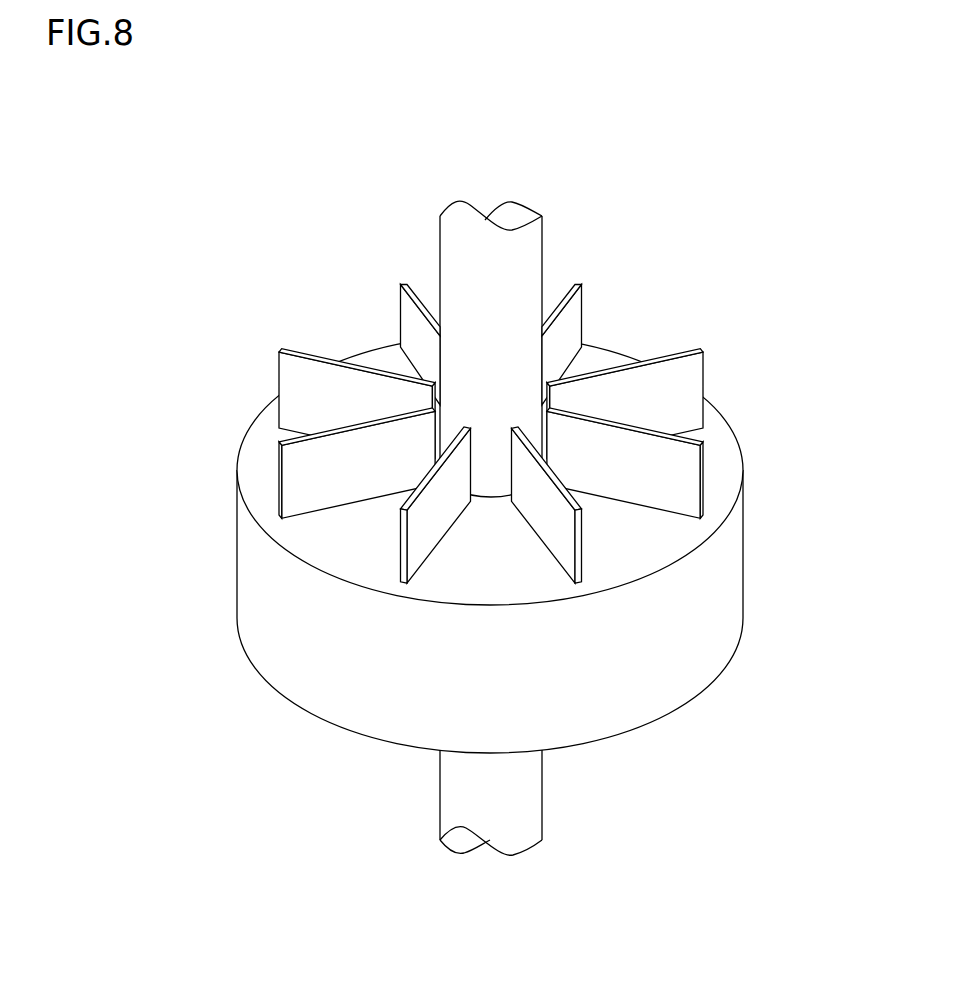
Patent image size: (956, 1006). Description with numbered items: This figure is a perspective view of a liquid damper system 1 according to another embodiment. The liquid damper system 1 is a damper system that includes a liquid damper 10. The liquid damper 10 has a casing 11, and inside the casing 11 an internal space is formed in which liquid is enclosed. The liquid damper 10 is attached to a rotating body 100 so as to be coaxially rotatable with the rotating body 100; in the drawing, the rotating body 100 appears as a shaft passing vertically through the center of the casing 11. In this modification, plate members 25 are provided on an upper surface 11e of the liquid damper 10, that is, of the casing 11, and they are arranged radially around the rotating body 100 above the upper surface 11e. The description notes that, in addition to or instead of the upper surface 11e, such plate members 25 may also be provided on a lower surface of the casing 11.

The liquid damper system 1 is at (485, 516).
The liquid damper 10 is at (507, 401).
The plate members 25 is at (678, 378).
The rotating body 100 is at (528, 247).
The casing 11 is at (530, 544).
The upper surface 11e is at (723, 453).